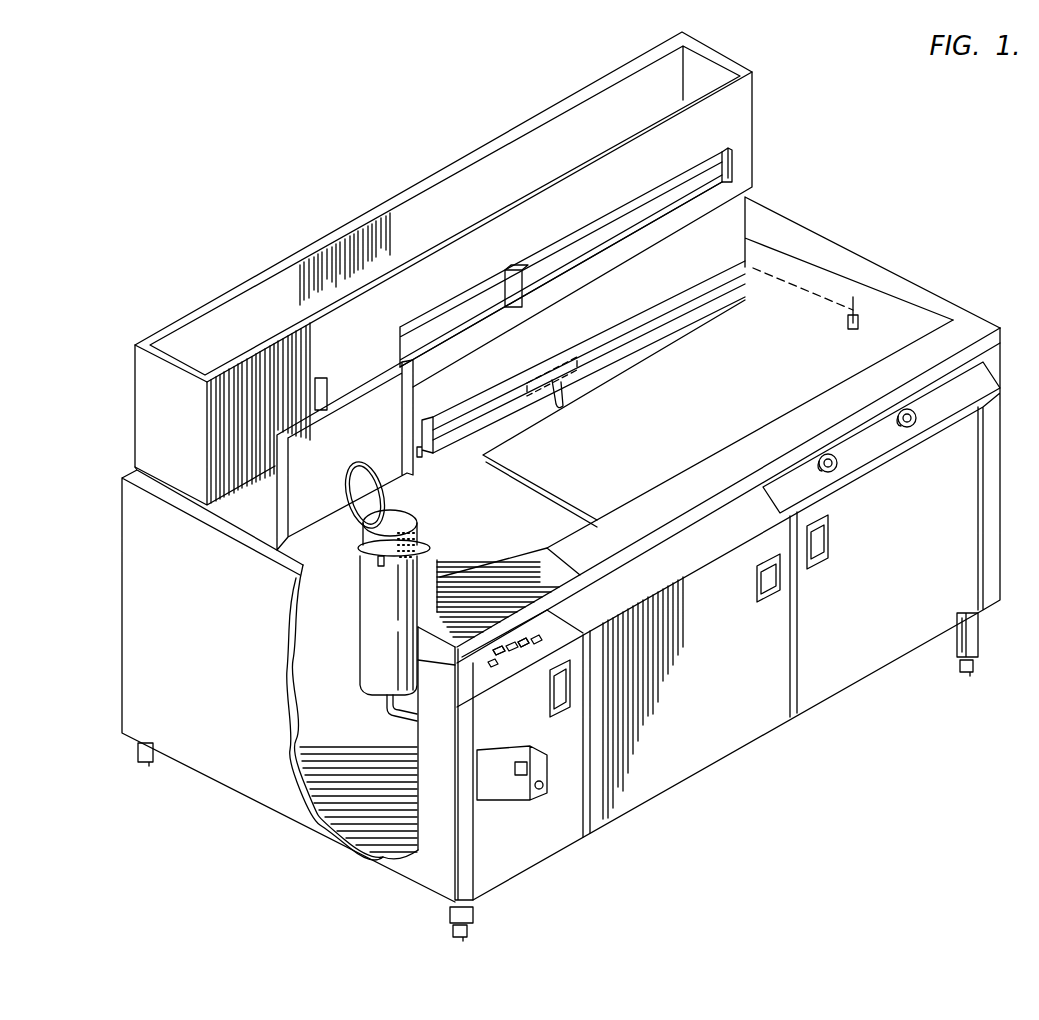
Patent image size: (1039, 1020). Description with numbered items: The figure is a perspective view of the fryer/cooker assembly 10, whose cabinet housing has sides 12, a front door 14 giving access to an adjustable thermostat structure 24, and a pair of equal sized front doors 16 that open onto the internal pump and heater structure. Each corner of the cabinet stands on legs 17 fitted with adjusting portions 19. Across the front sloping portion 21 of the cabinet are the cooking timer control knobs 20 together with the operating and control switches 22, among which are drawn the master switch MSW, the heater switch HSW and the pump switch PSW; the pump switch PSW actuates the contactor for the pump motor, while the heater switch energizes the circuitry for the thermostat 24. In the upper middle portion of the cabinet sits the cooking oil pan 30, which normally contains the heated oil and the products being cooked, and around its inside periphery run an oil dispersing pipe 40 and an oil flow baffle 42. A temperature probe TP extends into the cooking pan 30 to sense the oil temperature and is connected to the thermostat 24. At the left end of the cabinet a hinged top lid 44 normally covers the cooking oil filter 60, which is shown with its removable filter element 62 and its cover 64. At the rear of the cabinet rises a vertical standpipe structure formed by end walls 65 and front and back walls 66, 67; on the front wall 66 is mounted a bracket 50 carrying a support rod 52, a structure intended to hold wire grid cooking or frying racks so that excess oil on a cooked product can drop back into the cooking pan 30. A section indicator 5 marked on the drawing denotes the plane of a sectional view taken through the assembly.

The fryer/cooker assembly 10 is at (942, 229).
The sides 12 is at (204, 660).
The front door 14 is at (545, 825).
The front doors 16 is at (732, 660).
The legs 17 is at (448, 913).
The adjusting portions 19 is at (470, 934).
The cooking timer control knobs 20 is at (900, 412).
The front sloping portion 21 is at (705, 543).
The operating and control switches 22 is at (540, 627).
The adjustable thermostat structure 24 is at (526, 800).
The cooking oil pan 30 is at (655, 417).
The oil dispersing pipe 40 is at (858, 316).
The oil flow baffle 42 is at (678, 288).
The hinged top lid 44 is at (330, 441).
The bracket 50 is at (732, 172).
The support rod 52 is at (655, 192).
The cooking oil filter 60 is at (375, 621).
The removable filter element 62 is at (370, 556).
The cover 64 is at (363, 480).
The end walls 65 is at (688, 79).
The front wall 66 is at (475, 257).
The back wall 67 is at (465, 188).
The temperature probe TP is at (607, 407).
The section line 5 is at (887, 290).
The main switch MSW is at (497, 648).
The heater switch HSW is at (521, 641).
The pump switch PSW is at (490, 668).